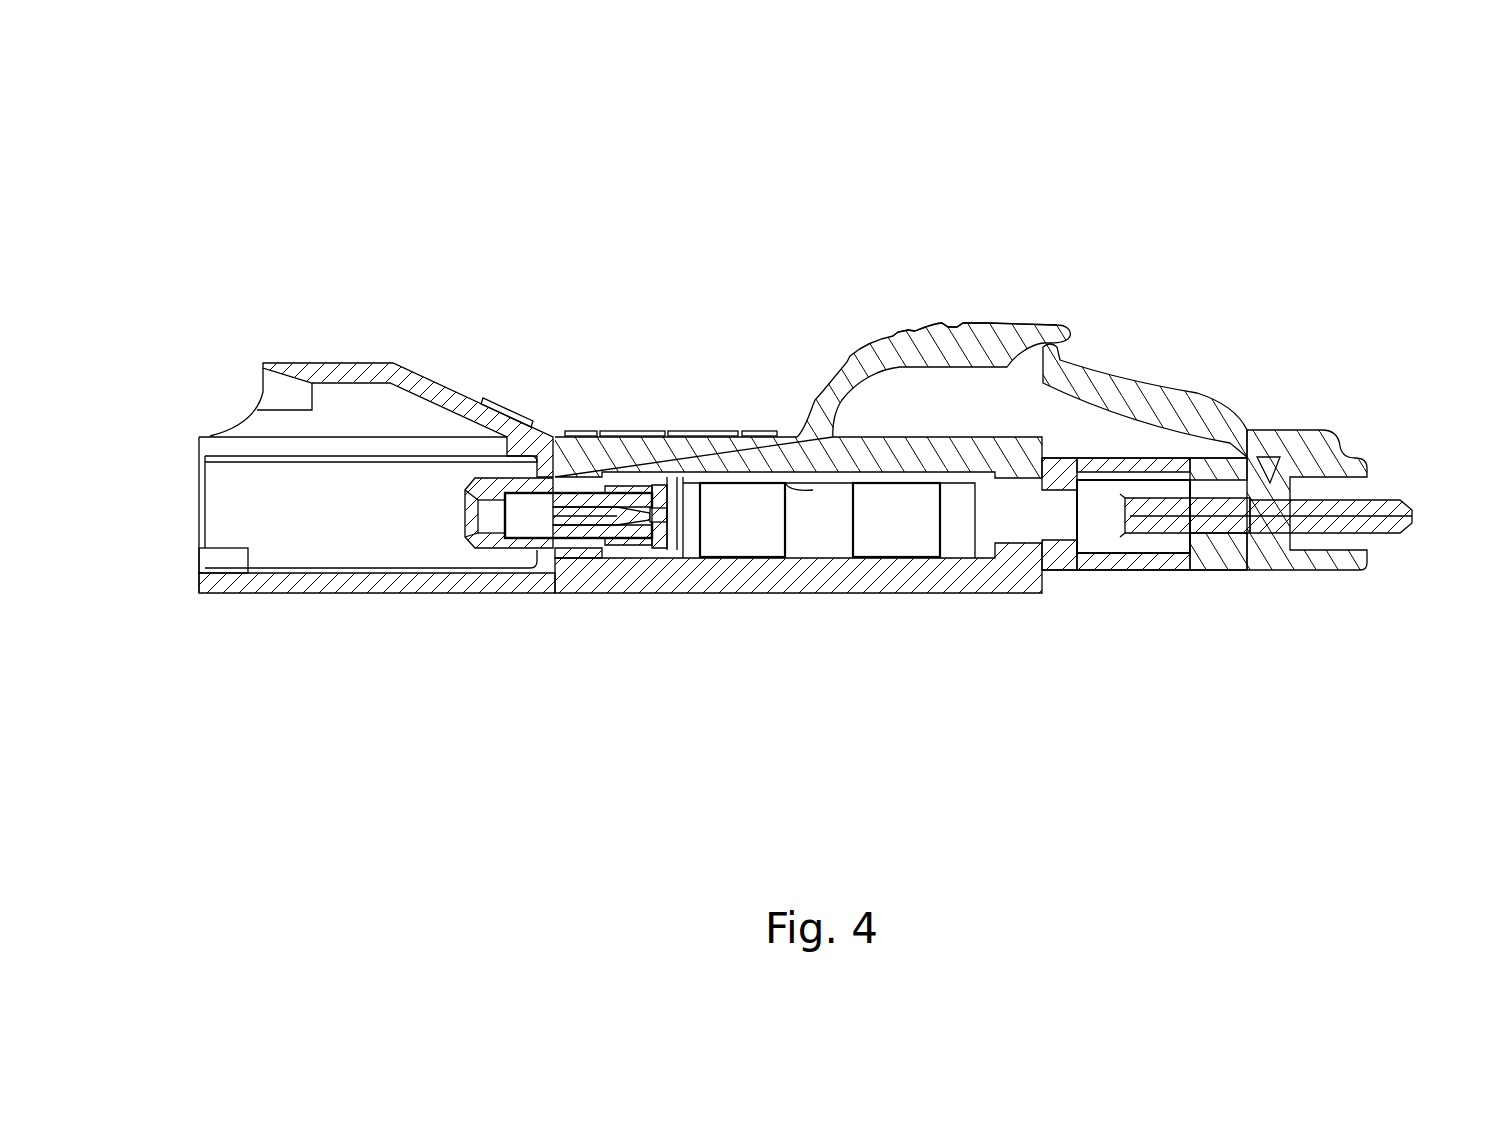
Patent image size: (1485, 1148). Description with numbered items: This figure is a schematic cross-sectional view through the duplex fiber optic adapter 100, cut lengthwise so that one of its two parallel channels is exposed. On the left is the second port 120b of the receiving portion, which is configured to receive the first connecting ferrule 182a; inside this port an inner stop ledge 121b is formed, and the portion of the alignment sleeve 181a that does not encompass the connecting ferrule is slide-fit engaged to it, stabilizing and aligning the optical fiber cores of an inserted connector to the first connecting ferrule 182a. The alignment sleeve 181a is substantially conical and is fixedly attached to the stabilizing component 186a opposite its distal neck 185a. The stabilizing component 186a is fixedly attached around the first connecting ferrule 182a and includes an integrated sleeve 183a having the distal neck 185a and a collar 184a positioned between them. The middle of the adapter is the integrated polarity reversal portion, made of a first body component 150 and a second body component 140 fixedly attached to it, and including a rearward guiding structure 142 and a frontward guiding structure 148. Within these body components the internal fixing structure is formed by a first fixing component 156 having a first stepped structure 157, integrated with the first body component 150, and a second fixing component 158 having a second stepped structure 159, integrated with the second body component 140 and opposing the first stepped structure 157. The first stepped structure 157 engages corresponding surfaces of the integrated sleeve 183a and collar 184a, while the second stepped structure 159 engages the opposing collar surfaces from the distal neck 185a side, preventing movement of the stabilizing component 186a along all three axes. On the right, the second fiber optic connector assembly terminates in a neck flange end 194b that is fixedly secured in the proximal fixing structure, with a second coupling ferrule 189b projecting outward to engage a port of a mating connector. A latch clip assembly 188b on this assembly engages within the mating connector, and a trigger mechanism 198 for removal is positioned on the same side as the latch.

The duplex fiber optic adapter 100 is at (1342, 155).
The second port 120b is at (463, 500).
The inner stop ledge 121b is at (482, 548).
The second body component 140 is at (917, 435).
The rearward guiding structure 142 is at (787, 512).
The frontward guiding structure 148 is at (916, 485).
The first body component 150 is at (775, 575).
The first fixing component 156 is at (612, 540).
The first stepped structure 157 is at (630, 548).
The second fixing component 158 is at (662, 525).
The second stepped structure 159 is at (675, 520).
The alignment sleeve 181a is at (503, 483).
The first connecting ferrule 182a is at (536, 548).
The integrated sleeve 183a is at (637, 508).
The collar 184a is at (657, 500).
The distal neck 185a is at (667, 500).
The stabilizing component 186a is at (700, 270).
The latch clip assembly 188b is at (1147, 380).
The second coupling ferrule 189b is at (1413, 513).
The neck flange end 194b is at (982, 557).
The trigger mechanism 198 is at (1020, 322).